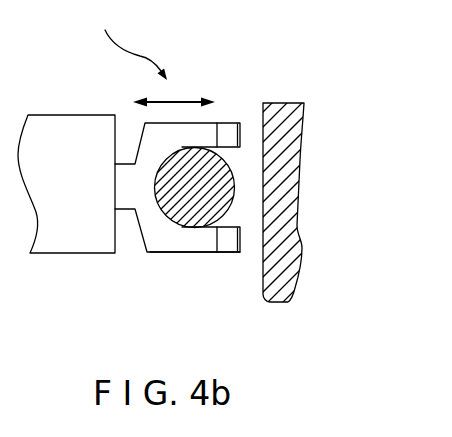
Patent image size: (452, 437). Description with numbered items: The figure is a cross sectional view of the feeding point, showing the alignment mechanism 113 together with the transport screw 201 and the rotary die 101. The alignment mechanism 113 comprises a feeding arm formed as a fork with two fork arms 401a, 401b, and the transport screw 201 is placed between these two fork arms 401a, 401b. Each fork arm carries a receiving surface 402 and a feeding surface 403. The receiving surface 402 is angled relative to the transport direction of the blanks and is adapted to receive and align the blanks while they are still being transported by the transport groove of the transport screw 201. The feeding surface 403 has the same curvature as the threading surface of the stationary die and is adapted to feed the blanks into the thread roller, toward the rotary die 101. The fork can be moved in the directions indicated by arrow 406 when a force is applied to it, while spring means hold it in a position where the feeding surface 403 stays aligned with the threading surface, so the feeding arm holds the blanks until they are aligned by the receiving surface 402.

The rotary die 101 is at (278, 302).
The alignment mechanism 113 is at (125, 44).
The transport screw 201 is at (234, 175).
The fork arm 401a is at (155, 131).
The fork arm 401b is at (157, 240).
The receiving surface 402 is at (210, 252).
The feeding surface 403 is at (226, 240).
The arrow indicating fork movement directions 406 is at (160, 101).